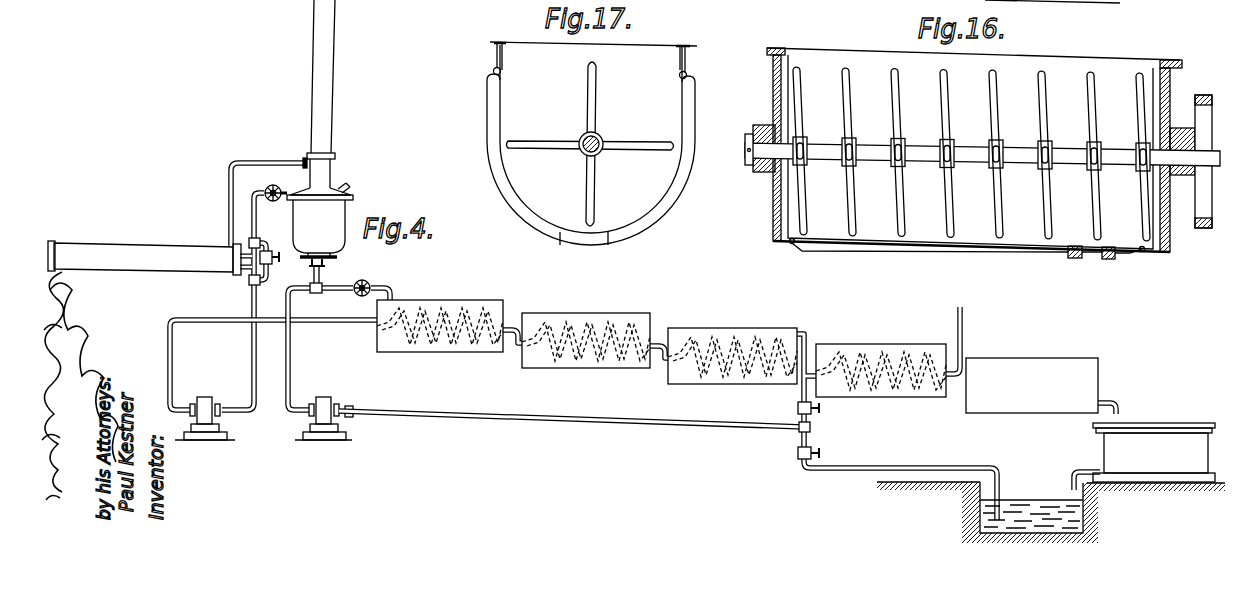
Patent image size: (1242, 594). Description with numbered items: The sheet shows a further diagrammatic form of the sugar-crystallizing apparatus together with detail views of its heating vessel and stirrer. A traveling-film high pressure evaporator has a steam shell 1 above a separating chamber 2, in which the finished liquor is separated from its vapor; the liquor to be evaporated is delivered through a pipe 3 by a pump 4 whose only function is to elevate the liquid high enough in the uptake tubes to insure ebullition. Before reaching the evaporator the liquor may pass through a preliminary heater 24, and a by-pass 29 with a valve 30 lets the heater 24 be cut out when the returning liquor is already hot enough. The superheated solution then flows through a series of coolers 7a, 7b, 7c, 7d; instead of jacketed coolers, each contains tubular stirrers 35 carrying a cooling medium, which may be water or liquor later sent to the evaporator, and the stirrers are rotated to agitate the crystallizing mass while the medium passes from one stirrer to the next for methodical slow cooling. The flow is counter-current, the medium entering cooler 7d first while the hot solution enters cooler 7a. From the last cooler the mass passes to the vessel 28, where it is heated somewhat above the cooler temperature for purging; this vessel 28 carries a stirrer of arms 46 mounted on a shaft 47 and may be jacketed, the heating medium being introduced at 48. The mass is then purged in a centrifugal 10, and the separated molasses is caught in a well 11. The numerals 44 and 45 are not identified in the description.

In FIG. 4, the steam shell 1 is at (332, 47).
In FIG. 4, the separating chamber 2 is at (320, 235).
In FIG. 4, the pipe 3 is at (257, 370).
In FIG. 4, the pump 4 is at (207, 398).
In FIG. 4, the first cooling vessel 7a is at (437, 354).
In FIG. 4, the second cooling vessel 7b is at (578, 369).
In FIG. 4, the third cooling vessel 7c is at (728, 385).
In FIG. 4, the fourth cooling vessel 7d is at (866, 398).
In FIG. 4, the centrifugal 10 is at (1154, 452).
In FIG. 4, the receptacle or well 11 is at (964, 518).
In FIG. 4, the preliminary heater 24 is at (144, 258).
In FIG. 4, the heating vessel 28 is at (1032, 385).
In FIG. 17, the heating vessel 28 is at (592, 143).
In FIG. 16, the heating vessel 28 is at (836, 52).
In FIG. 4, the by-pass 29 is at (261, 247).
In FIG. 4, the valve 30 is at (263, 267).
In FIG. 4, the tubular stirrers 35 is at (441, 310).
In FIG. 16, the element 44 is at (878, 6).
In FIG. 16, the element 45 is at (1110, 3).
In FIG. 17, the stirrer arms 46 is at (596, 106).
In FIG. 16, the stirrer arms 46 is at (996, 98).
In FIG. 17, the shaft 47 is at (599, 152).
In FIG. 16, the shaft 47 is at (965, 160).
In FIG. 16, the heating medium inlet 48 is at (1090, 257).